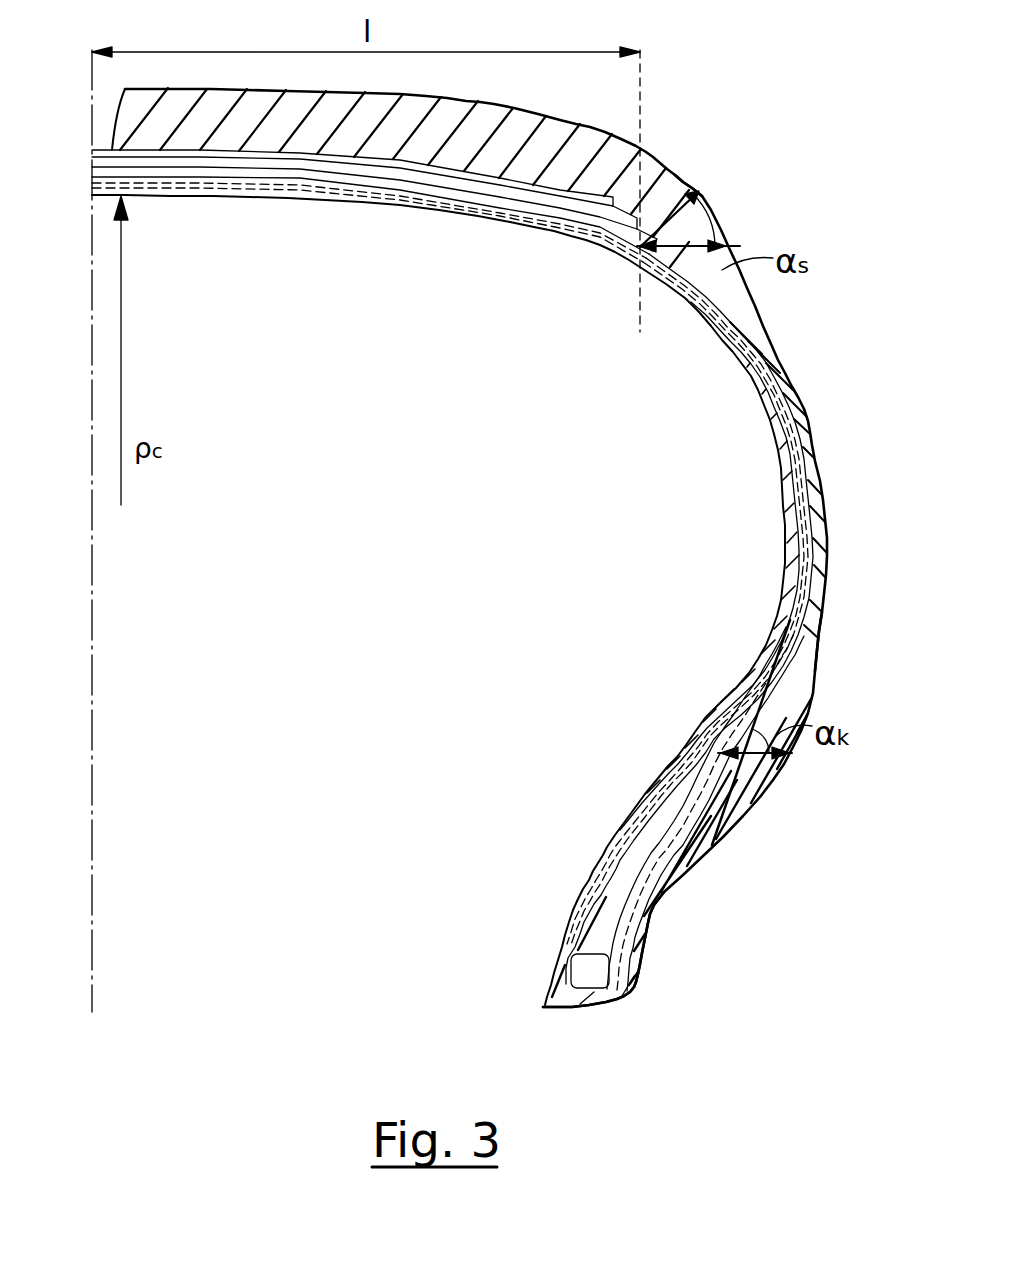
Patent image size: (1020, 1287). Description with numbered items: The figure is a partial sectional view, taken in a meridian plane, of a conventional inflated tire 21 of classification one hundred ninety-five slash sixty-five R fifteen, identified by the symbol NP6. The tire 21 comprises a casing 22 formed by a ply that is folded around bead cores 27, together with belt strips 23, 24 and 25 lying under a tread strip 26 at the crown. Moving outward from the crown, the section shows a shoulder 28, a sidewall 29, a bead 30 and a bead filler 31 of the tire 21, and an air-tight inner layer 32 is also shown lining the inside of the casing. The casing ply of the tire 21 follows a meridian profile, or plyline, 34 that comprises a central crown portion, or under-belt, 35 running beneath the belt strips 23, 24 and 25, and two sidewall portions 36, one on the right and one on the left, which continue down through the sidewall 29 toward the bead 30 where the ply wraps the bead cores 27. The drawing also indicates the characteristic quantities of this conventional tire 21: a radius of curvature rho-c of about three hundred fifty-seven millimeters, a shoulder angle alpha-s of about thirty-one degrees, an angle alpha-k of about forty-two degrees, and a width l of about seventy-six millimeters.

The tire 21 is at (676, 165).
The casing 22 is at (794, 398).
The belt strip 23 is at (568, 206).
The belt strip 24 is at (518, 186).
The belt strip 25 is at (458, 168).
The tread strip 26 is at (396, 118).
The bead core 27 is at (593, 972).
The shoulder 28 is at (690, 188).
The sidewall 29 is at (828, 594).
The bead 30 is at (647, 947).
The bead filler 31 is at (615, 872).
The air-tight inner layer 32 is at (683, 767).
The meridian profile (plyline) 34 is at (487, 213).
The central crown portion (under-belt) 35 is at (383, 201).
The sidewall portion 36 is at (783, 553).